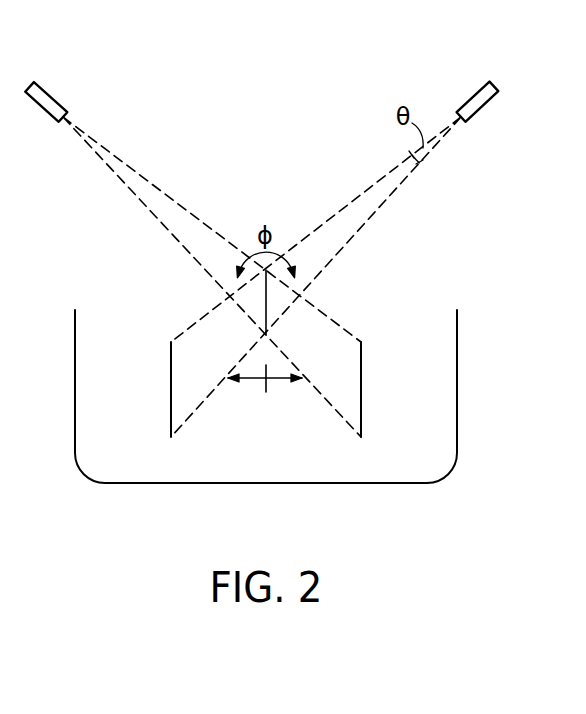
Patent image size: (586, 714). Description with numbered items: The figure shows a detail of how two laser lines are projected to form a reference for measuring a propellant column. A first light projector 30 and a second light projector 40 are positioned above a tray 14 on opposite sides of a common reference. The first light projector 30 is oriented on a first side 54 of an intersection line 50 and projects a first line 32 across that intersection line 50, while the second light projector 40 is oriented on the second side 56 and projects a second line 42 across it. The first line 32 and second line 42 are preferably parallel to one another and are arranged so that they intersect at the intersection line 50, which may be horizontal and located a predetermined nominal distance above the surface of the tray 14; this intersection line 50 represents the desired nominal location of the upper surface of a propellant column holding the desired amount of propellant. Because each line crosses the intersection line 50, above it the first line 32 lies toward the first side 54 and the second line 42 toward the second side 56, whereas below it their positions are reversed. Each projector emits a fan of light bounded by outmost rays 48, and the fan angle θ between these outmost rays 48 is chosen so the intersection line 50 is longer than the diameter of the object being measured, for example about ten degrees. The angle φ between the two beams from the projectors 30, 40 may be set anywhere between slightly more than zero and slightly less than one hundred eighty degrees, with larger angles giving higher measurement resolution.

The tray 14 is at (437, 437).
The first light projector 30 is at (60, 101).
The second light projector 40 is at (473, 99).
The first line 32 is at (362, 380).
The second line 42 is at (170, 380).
The outmost rays 48 is at (383, 178).
The intersection line 50 is at (267, 290).
The first side 54 is at (247, 381).
The second side 56 is at (285, 381).